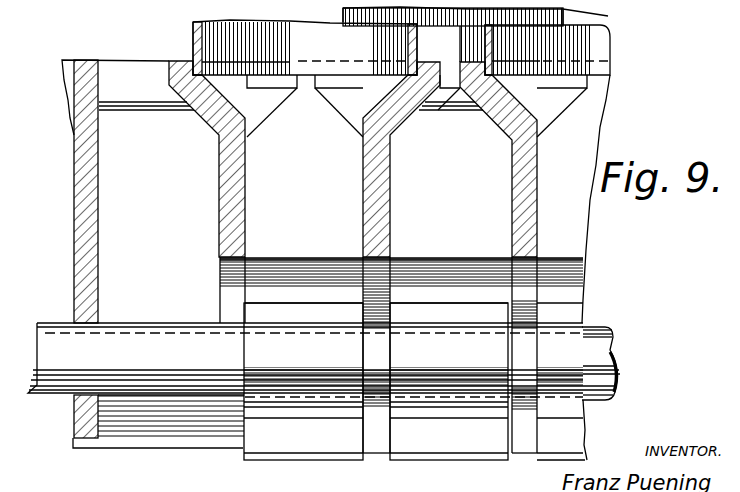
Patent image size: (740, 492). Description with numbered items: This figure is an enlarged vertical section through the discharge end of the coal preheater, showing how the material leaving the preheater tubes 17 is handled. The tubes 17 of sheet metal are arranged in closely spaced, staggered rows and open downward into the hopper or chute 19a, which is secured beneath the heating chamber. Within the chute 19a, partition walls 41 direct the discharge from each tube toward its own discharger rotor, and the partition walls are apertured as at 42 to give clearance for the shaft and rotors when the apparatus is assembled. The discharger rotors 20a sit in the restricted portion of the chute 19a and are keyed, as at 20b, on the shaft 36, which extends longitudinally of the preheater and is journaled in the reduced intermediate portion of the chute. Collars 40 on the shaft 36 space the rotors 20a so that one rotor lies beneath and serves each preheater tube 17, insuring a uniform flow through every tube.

The preheater tube 17 is at (212, 35).
The hopper or chute 19a is at (84, 189).
The partition wall 41 is at (222, 223).
The aperture in partition wall 42 is at (235, 293).
The collar 40 is at (380, 397).
The discharger rotor 20a is at (298, 443).
The shaft 36 is at (53, 330).
The key 20b is at (585, 322).